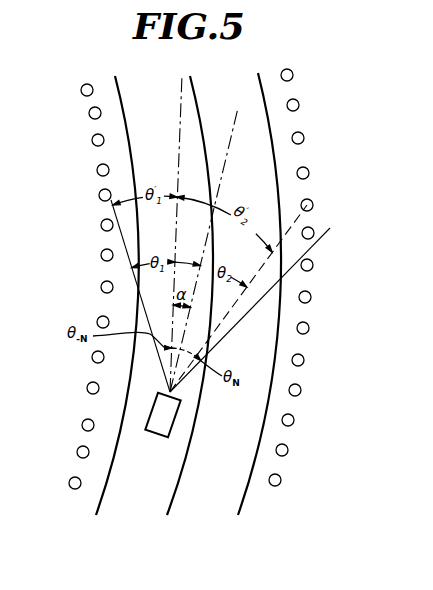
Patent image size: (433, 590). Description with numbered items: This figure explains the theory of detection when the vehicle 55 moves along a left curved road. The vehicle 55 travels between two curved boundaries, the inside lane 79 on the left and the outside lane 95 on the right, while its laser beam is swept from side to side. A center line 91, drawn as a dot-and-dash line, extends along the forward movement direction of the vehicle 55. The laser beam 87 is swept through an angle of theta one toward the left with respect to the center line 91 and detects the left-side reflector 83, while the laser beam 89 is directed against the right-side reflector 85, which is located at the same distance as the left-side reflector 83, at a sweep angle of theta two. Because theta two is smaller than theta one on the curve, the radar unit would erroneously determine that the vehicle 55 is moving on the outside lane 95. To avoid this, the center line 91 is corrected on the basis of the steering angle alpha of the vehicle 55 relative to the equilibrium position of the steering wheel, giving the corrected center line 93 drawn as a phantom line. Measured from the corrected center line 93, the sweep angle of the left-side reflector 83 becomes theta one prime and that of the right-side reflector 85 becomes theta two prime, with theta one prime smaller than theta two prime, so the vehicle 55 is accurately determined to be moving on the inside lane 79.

The vehicle 55 is at (153, 432).
The inside lane 79 is at (140, 492).
The left-side reflector 83 is at (111, 203).
The right-side reflector 85 is at (312, 202).
The laser beam 87 is at (130, 264).
The laser beam 89 is at (257, 275).
The center line 91 is at (223, 181).
The corrected center line 93 is at (178, 108).
The outside lane 95 is at (207, 498).